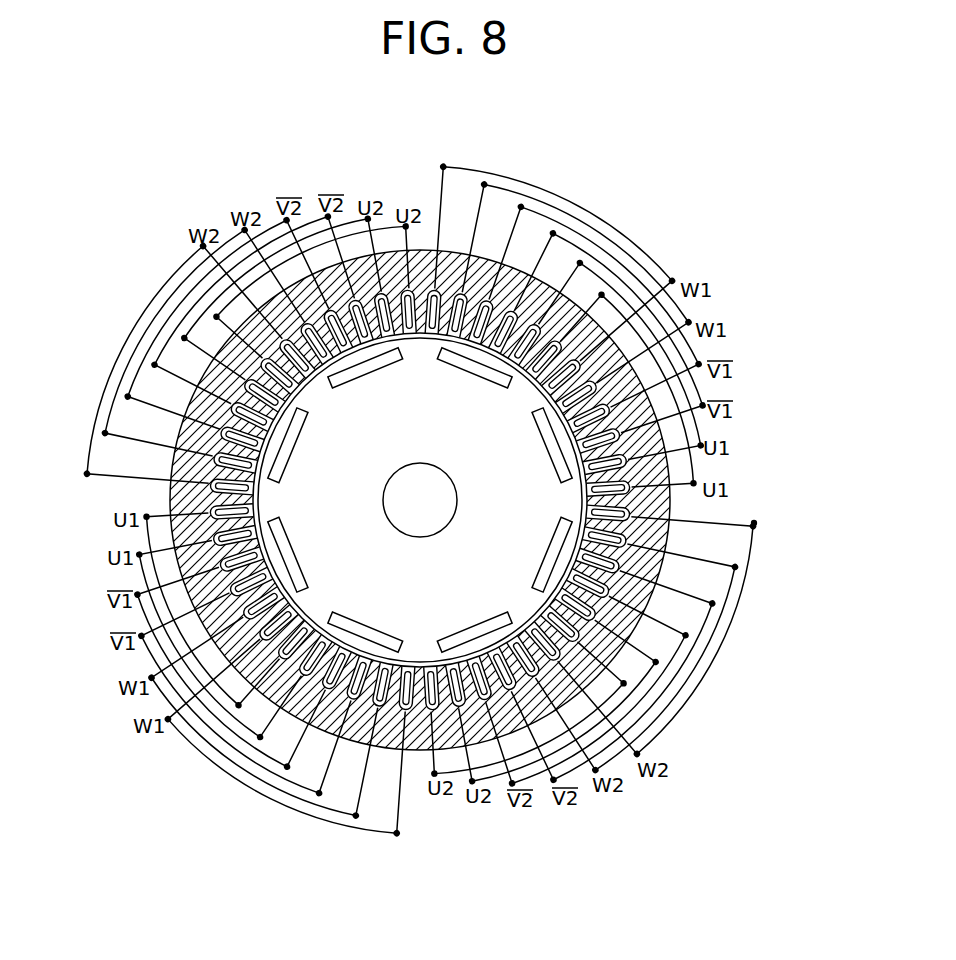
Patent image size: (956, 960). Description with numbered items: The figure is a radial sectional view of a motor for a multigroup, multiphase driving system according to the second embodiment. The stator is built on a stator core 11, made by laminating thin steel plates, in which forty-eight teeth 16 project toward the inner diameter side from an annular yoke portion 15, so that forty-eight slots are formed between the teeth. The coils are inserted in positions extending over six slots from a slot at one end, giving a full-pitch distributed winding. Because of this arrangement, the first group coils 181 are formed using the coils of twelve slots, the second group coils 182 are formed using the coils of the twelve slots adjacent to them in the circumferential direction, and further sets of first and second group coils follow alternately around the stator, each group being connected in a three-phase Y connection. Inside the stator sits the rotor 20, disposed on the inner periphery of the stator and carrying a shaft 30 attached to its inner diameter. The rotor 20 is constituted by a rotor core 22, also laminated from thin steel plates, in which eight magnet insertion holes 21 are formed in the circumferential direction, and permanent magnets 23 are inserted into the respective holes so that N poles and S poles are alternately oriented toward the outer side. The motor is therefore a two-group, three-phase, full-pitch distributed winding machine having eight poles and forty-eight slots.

The stator core 11 is at (509, 500).
The yoke portion 15 is at (756, 523).
The teeth 16 is at (622, 497).
The rotor 20 is at (763, 437).
The magnet insertion holes 21 is at (690, 467).
The rotor core 22 is at (690, 483).
The permanent magnets 23 is at (705, 405).
The shaft 30 is at (673, 590).
The first group coils 181 is at (655, 262).
The second group coils 182 is at (168, 278).